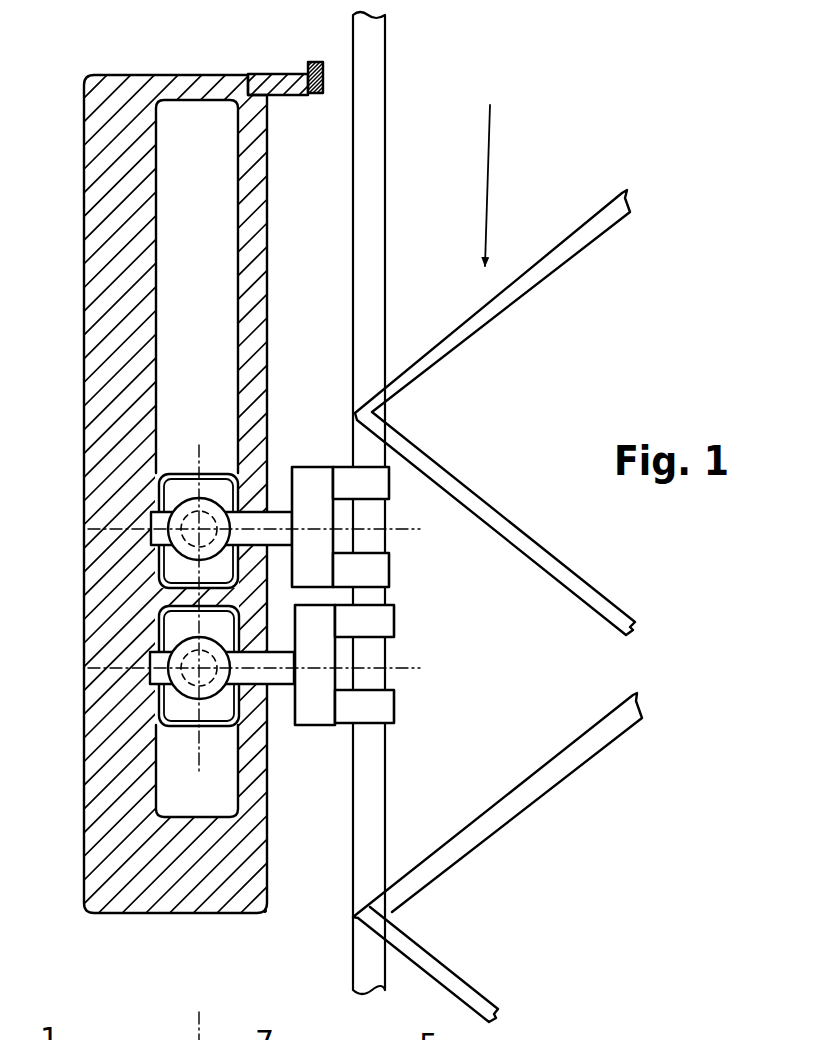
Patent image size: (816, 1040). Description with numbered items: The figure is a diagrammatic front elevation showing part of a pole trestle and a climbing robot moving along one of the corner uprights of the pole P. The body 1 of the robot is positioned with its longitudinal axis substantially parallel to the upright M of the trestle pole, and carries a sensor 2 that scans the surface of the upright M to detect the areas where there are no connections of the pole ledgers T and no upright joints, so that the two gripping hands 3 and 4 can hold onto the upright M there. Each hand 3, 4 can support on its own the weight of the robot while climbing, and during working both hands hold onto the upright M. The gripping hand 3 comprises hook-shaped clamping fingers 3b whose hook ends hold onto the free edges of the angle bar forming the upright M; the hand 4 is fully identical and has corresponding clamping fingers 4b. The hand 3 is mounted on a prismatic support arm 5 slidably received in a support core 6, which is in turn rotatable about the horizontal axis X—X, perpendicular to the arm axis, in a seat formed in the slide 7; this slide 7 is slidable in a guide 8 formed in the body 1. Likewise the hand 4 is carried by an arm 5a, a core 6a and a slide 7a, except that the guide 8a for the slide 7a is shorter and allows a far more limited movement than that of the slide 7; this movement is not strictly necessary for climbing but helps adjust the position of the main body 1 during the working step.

The body 1 is at (81, 81).
The sensor 2 is at (278, 72).
The gripping hand 3 is at (313, 538).
The clamping fingers 3b is at (375, 482).
The gripping hand 4 is at (317, 697).
The clamping fingers 4b is at (377, 620).
The support arm 5 is at (283, 510).
The arm 5a is at (278, 678).
The support core 6 is at (183, 547).
The core 6a is at (187, 688).
The slide 7 is at (181, 478).
The slide 7a is at (190, 722).
The guide 8 is at (166, 259).
The guide 8a is at (210, 810).
The upright M is at (373, 165).
The pole P is at (495, 169).
The pole ledgers T is at (490, 496).
The horizontal axis X— X is at (199, 742).